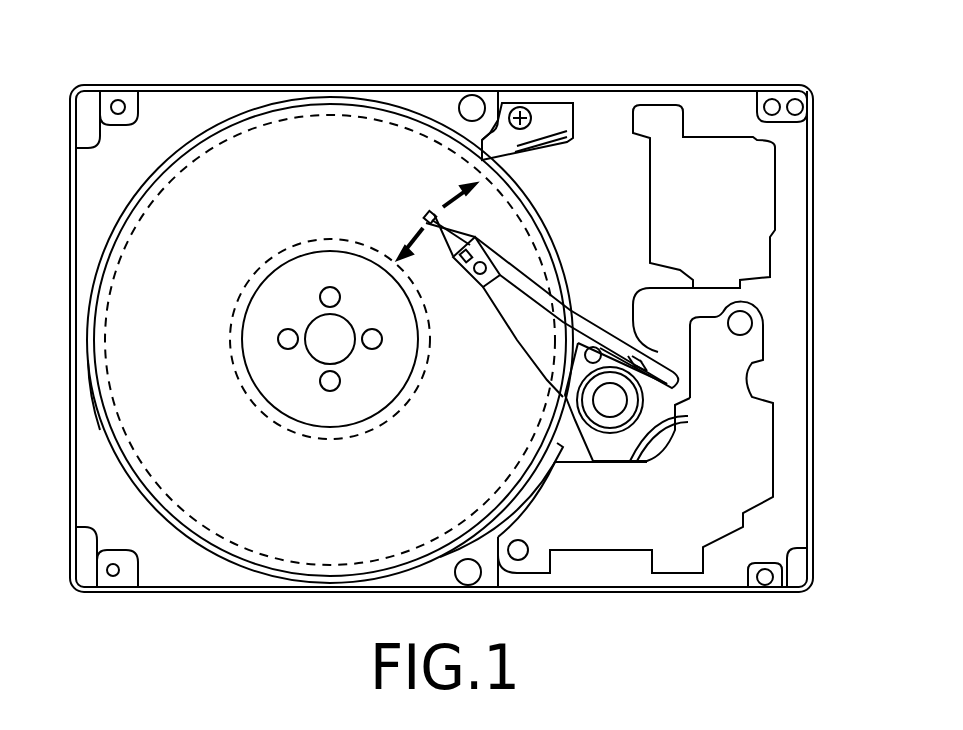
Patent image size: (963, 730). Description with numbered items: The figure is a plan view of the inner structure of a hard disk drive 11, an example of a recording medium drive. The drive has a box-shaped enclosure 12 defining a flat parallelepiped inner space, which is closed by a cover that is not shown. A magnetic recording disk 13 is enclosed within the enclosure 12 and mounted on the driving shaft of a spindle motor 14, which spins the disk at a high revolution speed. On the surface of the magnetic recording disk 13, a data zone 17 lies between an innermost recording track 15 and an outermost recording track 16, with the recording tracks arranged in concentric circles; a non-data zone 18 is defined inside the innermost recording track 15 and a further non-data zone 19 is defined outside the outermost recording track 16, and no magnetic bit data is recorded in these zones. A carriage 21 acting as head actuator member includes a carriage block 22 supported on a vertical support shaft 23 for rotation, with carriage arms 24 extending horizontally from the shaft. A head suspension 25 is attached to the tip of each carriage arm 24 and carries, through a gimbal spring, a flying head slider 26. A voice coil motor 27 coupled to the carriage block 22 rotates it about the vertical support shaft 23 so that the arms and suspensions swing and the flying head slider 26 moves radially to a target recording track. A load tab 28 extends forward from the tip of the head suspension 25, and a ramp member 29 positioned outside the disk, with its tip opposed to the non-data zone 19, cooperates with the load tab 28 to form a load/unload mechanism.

The hard disk drive 11 is at (692, 85).
The enclosure 12 is at (200, 84).
The magnetic recording disk 13 is at (337, 107).
The spindle motor 14 is at (347, 357).
The innermost recording track 15 is at (228, 342).
The outermost recording track 16 is at (113, 410).
The data zone 17 is at (182, 291).
The non-data zone 18 is at (238, 373).
The non-data zone 19 is at (143, 443).
The carriage 21 is at (572, 307).
The carriage block 22 is at (563, 400).
The vertical support shaft 23 is at (608, 417).
The carriage arm 24 is at (500, 318).
The head suspension 25 is at (475, 212).
The flying head slider 26 is at (425, 220).
The voice coil motor 27 is at (675, 440).
The load tab 28 is at (430, 214).
The ramp member 29 is at (507, 153).